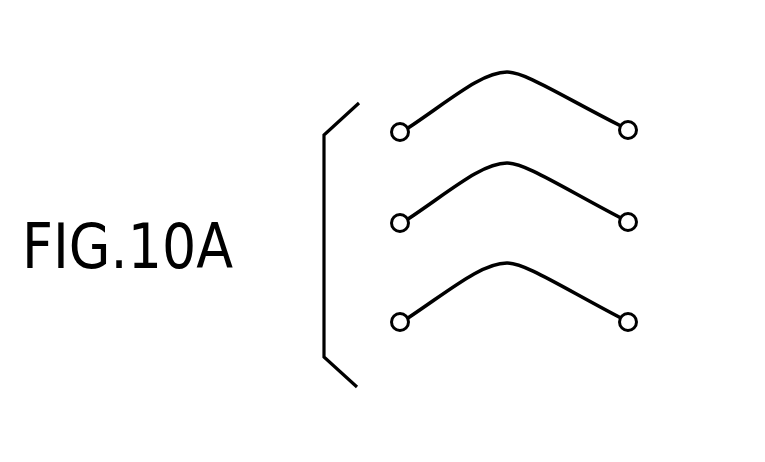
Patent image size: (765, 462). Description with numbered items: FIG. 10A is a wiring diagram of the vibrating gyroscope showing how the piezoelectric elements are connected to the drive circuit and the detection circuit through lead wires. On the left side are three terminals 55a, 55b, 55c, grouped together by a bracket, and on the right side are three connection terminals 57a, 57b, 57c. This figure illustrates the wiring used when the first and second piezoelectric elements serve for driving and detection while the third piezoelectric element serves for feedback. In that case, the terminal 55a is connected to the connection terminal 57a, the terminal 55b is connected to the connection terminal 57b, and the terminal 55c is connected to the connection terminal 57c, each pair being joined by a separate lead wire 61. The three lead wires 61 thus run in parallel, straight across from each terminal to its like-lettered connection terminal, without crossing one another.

The terminal 55a is at (400, 121).
The terminal 55b is at (405, 184).
The terminal 55c is at (400, 311).
The connection terminal 57a is at (641, 128).
The connection terminal 57b is at (640, 219).
The connection terminal 57c is at (640, 314).
The lead wire 61 is at (542, 82).